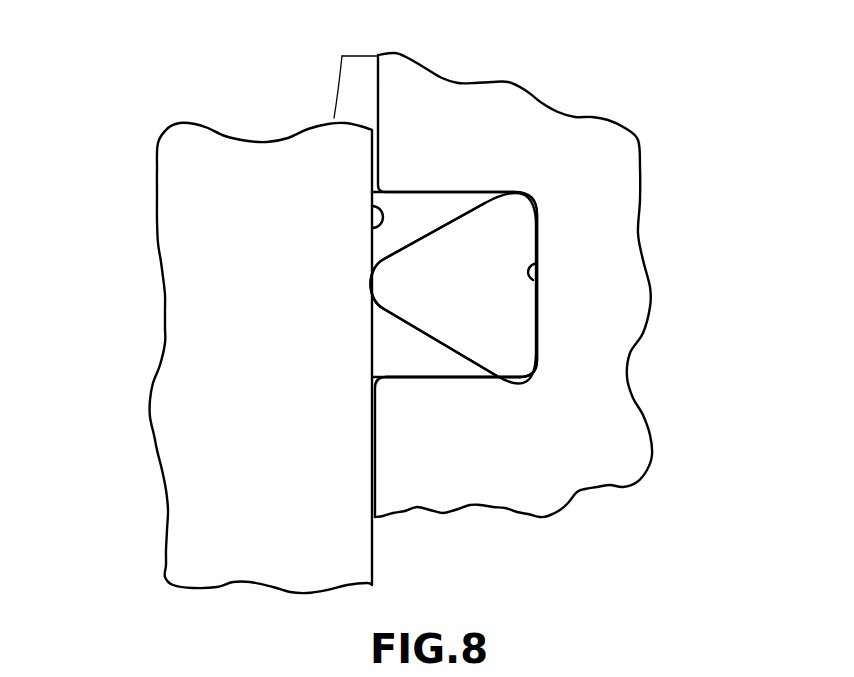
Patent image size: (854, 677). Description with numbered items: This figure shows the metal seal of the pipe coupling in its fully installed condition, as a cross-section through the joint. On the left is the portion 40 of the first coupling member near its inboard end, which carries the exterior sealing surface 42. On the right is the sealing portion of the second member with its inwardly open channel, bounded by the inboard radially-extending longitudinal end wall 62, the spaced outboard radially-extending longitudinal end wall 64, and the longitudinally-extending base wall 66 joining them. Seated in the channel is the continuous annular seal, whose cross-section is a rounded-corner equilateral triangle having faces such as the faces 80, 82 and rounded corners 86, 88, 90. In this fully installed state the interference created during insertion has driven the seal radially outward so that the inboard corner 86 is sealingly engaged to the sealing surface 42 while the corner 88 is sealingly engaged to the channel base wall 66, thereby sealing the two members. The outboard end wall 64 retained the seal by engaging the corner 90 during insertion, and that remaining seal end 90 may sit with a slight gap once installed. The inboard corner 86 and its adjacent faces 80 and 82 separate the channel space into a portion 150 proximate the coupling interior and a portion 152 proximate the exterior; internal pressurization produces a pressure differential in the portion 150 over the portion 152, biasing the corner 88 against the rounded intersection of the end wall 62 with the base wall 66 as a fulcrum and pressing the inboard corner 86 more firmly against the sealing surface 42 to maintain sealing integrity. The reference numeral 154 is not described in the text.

The portion of the first member 40 is at (209, 283).
The exterior sealing surface 42 is at (373, 208).
The inboard radially-extending longitudinal end wall 62 is at (466, 205).
The outboard radially-extending longitudinal end wall 64 is at (470, 380).
The longitudinally-extending base wall 66 is at (537, 278).
The face 80 is at (400, 318).
The face 82 is at (441, 227).
The inboard corner 86 is at (373, 285).
The corner 88 is at (516, 193).
The corner 90 is at (538, 379).
The portion of the space 150 is at (393, 350).
The portion of the space 152 is at (402, 210).
The pocket rear wall 154 is at (540, 338).